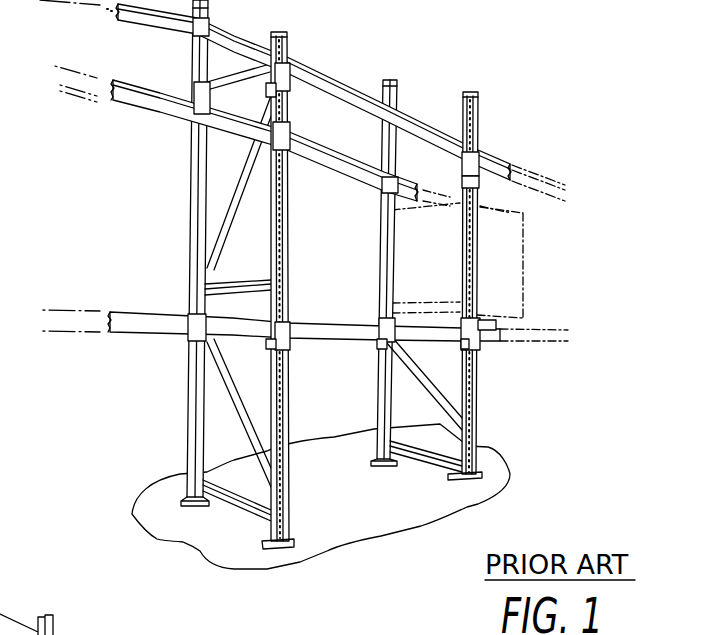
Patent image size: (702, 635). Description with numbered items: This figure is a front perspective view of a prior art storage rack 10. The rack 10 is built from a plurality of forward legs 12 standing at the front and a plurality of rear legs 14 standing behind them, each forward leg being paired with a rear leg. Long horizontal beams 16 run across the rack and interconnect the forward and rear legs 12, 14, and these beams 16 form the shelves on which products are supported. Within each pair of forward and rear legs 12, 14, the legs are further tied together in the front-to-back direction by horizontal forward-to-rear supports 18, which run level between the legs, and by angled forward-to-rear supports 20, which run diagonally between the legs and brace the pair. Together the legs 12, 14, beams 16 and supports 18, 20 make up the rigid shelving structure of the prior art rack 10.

The rack 10 is at (483, 81).
The forward legs 12 is at (478, 262).
The rear legs 14 is at (183, 212).
The horizontal beams 16 is at (300, 152).
The horizontal forward-to-rear supports 18 is at (233, 285).
The angled forward-to-rear supports 20 is at (227, 185).